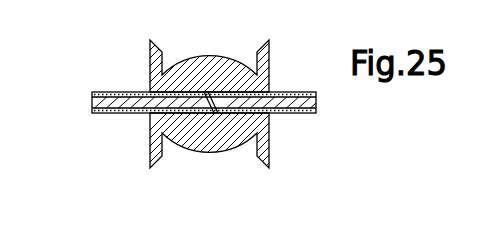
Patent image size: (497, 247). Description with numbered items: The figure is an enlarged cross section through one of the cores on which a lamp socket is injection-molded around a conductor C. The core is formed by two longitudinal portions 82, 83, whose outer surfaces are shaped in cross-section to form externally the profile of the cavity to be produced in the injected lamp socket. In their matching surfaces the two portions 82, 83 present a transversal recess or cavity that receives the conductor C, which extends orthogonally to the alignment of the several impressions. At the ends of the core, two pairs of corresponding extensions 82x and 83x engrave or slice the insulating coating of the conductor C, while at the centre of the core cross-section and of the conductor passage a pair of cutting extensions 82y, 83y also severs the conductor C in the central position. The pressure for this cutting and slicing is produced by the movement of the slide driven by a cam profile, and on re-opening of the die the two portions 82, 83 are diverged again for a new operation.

The core portion 82 is at (195, 58).
The core portion 83 is at (182, 136).
The extensions 82x is at (148, 91).
The extensions 83x is at (148, 115).
The cutting extension 82y is at (213, 89).
The cutting extension 83y is at (209, 116).
The conductor C is at (90, 103).